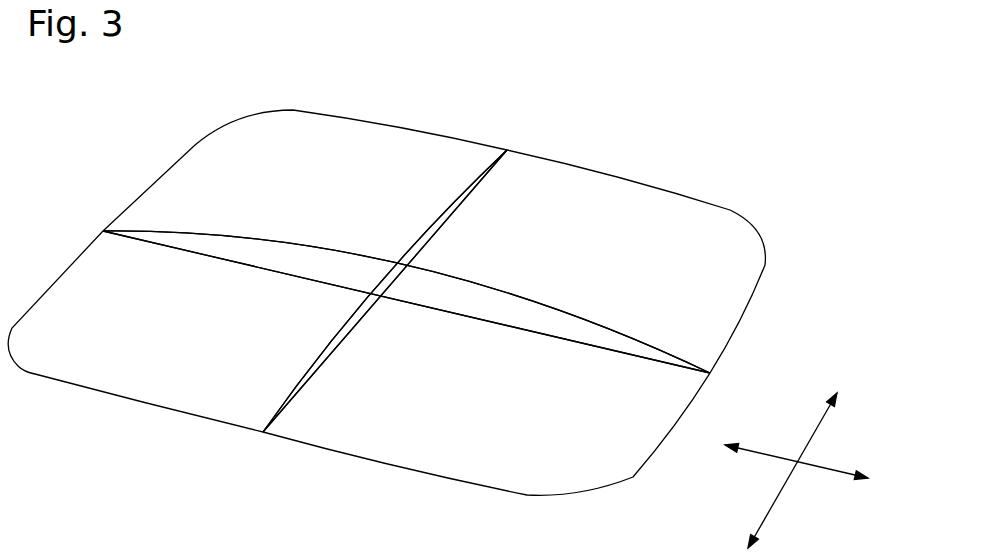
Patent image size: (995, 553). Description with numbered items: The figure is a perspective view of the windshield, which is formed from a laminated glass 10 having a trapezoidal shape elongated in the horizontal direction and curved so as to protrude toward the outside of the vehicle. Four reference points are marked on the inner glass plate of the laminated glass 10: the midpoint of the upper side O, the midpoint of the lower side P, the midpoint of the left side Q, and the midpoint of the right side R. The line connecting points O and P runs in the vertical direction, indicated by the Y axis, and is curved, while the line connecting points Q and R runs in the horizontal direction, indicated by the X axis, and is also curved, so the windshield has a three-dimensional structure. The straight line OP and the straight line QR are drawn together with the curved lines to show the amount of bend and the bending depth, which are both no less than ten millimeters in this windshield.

The laminated glass 10 is at (640, 149).
The midpoint of the upper side of the inner glass plate O is at (388, 277).
The midpoint of the lower side of the inner glass plate P is at (376, 303).
The midpoint of the left side of the inner glass plate Q is at (392, 292).
The midpoint of the right side of the inner glass plate R is at (419, 311).
The X axis X is at (807, 472).
The Y axis Y is at (800, 458).